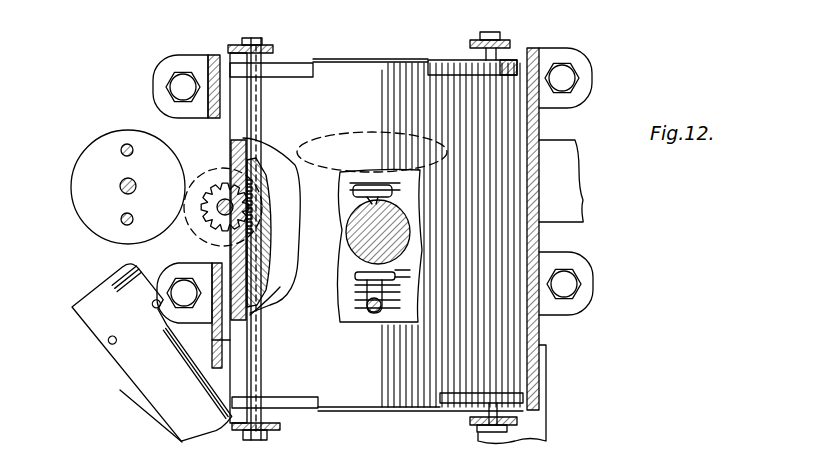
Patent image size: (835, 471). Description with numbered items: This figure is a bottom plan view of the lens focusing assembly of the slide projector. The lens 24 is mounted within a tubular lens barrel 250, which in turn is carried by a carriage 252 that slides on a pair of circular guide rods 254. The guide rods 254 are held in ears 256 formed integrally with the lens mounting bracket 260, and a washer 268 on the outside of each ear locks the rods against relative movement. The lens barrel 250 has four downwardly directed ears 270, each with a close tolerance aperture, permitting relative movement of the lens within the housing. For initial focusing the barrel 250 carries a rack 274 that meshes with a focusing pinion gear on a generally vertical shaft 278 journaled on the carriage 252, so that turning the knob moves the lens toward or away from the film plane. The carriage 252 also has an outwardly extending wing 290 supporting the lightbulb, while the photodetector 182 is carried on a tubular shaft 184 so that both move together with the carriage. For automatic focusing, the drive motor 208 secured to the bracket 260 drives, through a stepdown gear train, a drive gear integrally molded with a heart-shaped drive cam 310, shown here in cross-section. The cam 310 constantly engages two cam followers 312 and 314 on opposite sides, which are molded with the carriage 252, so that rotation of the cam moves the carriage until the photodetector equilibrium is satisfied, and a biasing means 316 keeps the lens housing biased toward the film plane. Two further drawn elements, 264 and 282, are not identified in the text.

The lens 24 is at (365, 130).
The photodetector 182 is at (92, 320).
The tubular shaft 184 is at (167, 402).
The drive motor 208 is at (93, 152).
The lens barrel 250 is at (280, 233).
The carriage 252 is at (517, 245).
The guide rods 254 is at (255, 38).
The ears 256 is at (273, 48).
The lens mounting bracket 260 is at (543, 330).
The mounting lug 264 is at (170, 75).
The washer 268 is at (243, 42).
The ears 270 is at (298, 72).
The rack 274 is at (245, 182).
The vertical shaft 278 is at (215, 232).
The carrier 282 is at (233, 182).
The wing 290 is at (575, 192).
The heart-shaped drive cam 310 is at (358, 237).
The cam follower 312 is at (372, 185).
The cam follower 314 is at (388, 320).
The biasing means 316 is at (368, 295).